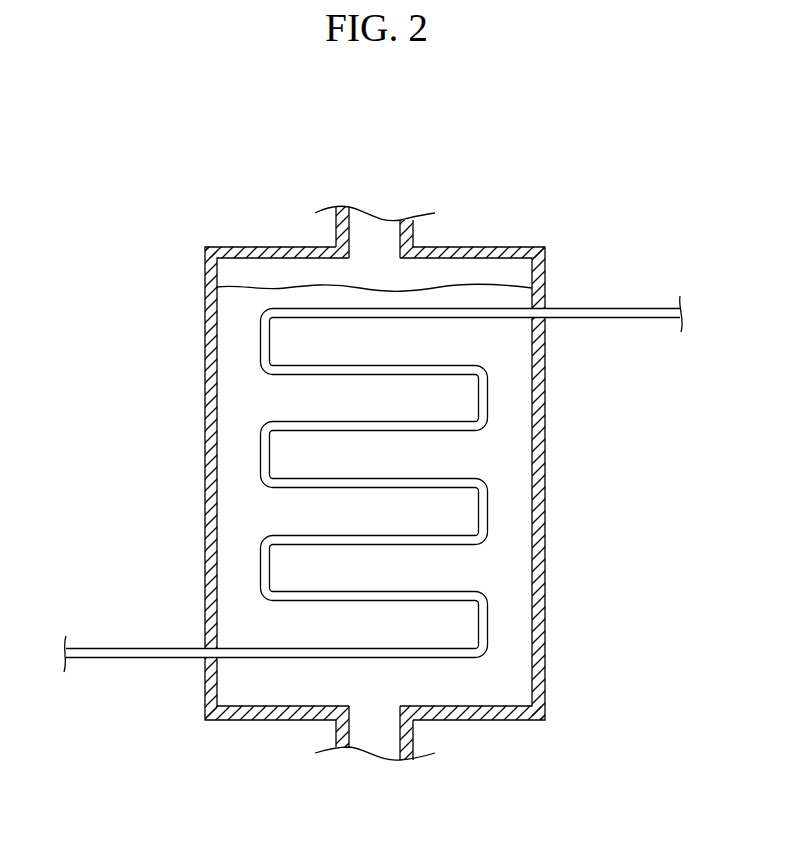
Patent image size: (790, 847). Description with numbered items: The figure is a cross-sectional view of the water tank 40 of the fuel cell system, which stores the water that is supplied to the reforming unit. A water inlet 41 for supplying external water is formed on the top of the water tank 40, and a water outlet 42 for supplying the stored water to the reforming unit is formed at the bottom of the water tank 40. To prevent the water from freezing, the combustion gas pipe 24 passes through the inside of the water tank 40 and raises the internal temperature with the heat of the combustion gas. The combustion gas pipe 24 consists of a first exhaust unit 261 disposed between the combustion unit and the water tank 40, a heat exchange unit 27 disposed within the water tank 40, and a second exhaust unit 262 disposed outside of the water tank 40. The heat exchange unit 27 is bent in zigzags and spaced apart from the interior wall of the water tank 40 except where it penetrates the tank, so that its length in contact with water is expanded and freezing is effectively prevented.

The combustion gas pipe 24 is at (373, 490).
The heat exchange unit 27 is at (487, 511).
The water tank 40 is at (205, 396).
The water inlet 41 is at (377, 232).
The water outlet 42 is at (373, 735).
The first exhaust unit 261 is at (118, 658).
The second exhaust unit 262 is at (633, 310).